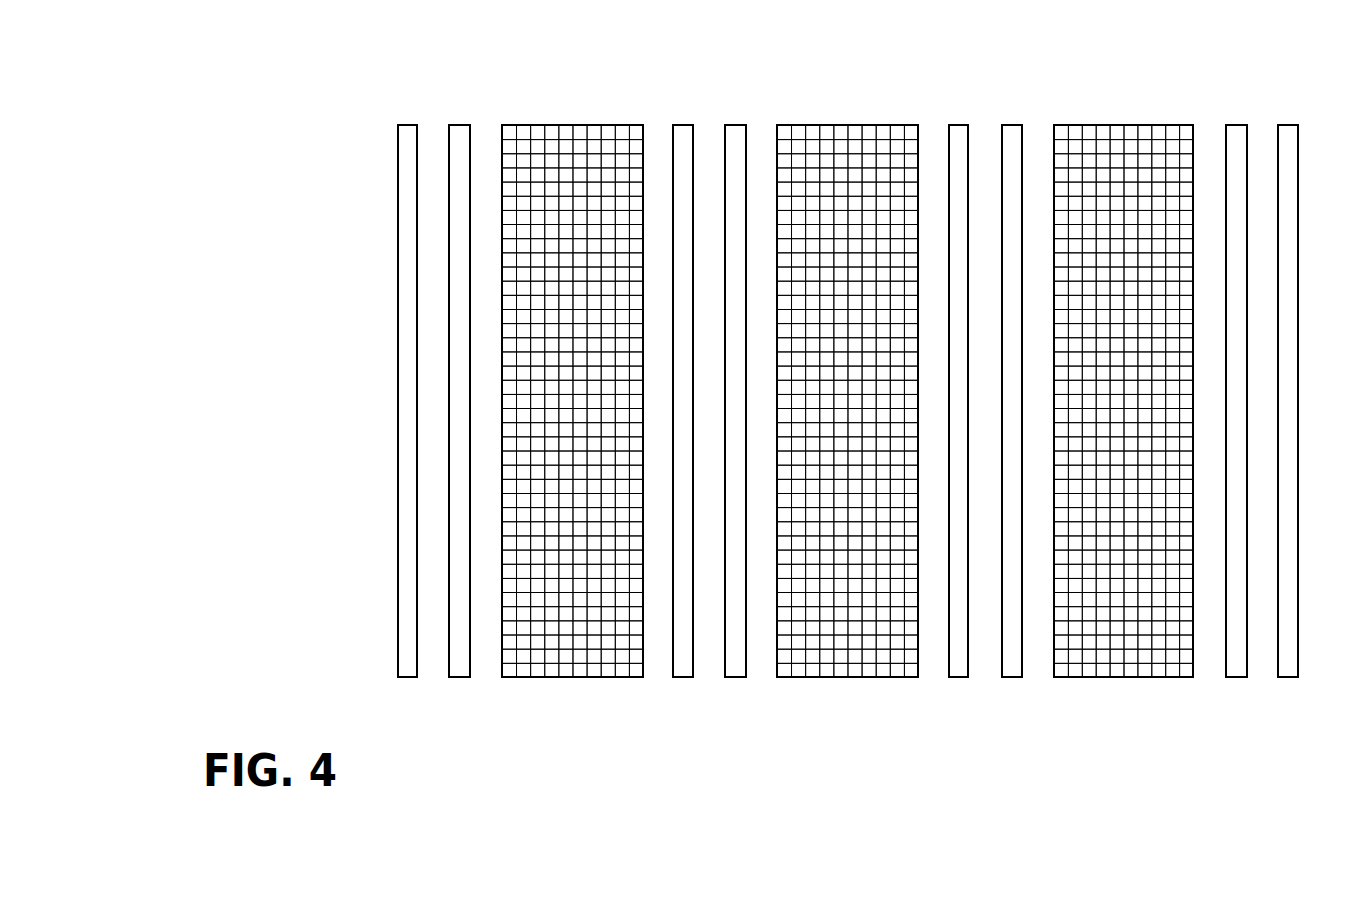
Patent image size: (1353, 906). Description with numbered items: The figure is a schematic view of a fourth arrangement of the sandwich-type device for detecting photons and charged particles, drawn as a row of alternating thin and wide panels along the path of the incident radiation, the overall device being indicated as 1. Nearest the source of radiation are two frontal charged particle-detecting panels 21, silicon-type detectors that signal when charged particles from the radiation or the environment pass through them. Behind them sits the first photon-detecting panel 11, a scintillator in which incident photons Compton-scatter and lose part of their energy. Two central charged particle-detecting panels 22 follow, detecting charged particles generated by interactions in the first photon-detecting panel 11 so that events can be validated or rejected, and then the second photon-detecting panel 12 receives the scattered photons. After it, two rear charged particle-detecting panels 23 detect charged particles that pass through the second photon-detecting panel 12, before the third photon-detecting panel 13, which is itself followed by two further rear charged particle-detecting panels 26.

The display panel / light-emitting substrate 1 is at (1065, 127).
The first photon-detecting panel 11 is at (567, 660).
The second photon-detecting panel 12 is at (832, 662).
The third photon-detecting panel 13 is at (1120, 665).
The frontal charged particle-detecting panel 21 is at (458, 140).
The central charged particle-detecting panel 22 is at (683, 662).
The rear charged particle-detecting panel 23 is at (958, 660).
The rear charged particle-detecting panel 26 is at (1237, 660).